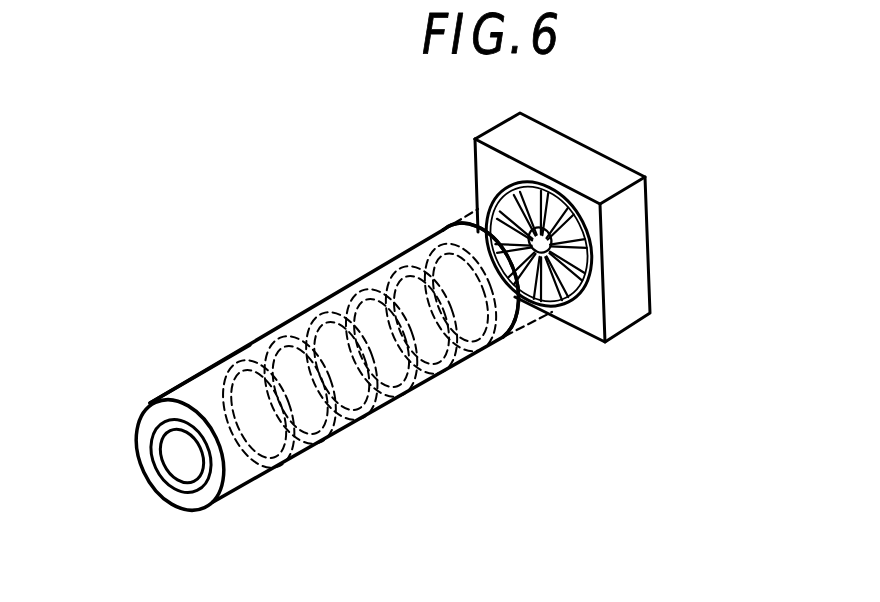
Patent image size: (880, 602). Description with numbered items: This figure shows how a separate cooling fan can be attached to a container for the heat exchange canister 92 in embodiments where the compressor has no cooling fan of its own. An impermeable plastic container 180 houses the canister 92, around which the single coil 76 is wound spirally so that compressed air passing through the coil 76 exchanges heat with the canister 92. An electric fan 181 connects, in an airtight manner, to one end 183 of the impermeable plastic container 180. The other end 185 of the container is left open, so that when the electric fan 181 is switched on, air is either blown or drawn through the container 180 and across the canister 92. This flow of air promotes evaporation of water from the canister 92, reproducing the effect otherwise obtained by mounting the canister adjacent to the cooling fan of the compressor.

The coil 76 is at (187, 378).
The heat exchange canister 92 is at (260, 335).
The impermeable plastic container 180 is at (324, 450).
The electric fan 181 is at (635, 237).
The one end of the impermeable plastic container 183 is at (512, 343).
The other end of the container 185 is at (150, 480).